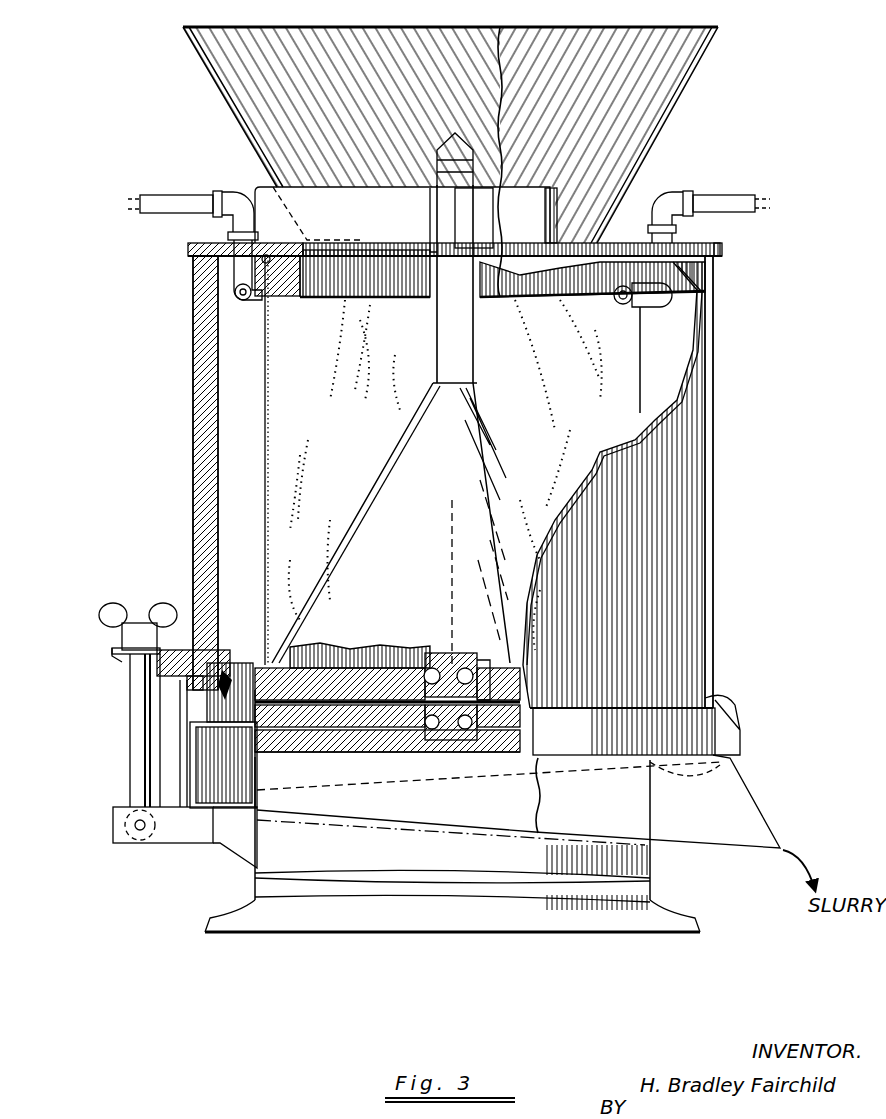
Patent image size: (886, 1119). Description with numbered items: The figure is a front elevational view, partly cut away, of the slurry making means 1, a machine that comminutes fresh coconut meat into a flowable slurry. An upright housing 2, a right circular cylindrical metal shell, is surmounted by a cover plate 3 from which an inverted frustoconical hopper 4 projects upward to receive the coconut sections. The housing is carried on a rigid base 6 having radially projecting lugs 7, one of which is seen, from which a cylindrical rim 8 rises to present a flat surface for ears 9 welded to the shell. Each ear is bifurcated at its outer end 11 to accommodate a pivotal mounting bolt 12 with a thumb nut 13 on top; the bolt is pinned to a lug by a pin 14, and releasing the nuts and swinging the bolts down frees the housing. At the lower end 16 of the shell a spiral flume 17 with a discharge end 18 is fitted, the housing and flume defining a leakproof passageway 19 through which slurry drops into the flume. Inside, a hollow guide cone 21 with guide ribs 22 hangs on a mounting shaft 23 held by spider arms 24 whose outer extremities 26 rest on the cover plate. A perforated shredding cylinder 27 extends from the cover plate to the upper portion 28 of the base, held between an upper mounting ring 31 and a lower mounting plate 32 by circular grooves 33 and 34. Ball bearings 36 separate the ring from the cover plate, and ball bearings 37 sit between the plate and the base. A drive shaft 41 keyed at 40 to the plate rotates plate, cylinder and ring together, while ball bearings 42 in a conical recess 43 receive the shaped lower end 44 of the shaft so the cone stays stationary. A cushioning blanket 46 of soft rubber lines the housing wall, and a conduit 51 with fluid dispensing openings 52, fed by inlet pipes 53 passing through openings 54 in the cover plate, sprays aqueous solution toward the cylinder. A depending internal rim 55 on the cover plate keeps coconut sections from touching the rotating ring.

The means for producing slurry 1 is at (758, 124).
The upright housing 2 is at (703, 418).
The cover plate 3 is at (722, 250).
The hopper 4 is at (695, 63).
The base 6 is at (670, 917).
The lugs 7 is at (187, 840).
The cylindrical rim 8 is at (170, 750).
The ears 9 is at (152, 672).
The bifurcated outer end 11 is at (118, 655).
The pivotal mounting bolt 12 is at (133, 735).
The thumb nut 13 is at (138, 625).
The pin 14 is at (130, 832).
The lower end of housing shell 16 is at (712, 700).
The spiral flume 17 is at (198, 775).
The discharge end 18 is at (755, 800).
The circumferential leakproof passageway 19 is at (224, 690).
The hollow guide cone 21 is at (430, 494).
The guide ribs 22 is at (333, 537).
The mounting shaft 23 is at (436, 342).
The spider arms 24 is at (480, 188).
The outer extremities of spider arms 26 is at (255, 200).
The perforated shredding cylinder 27 is at (268, 410).
The upper portion of base 28 is at (267, 720).
The upper mounting ring 31 is at (280, 300).
The lower mounting plate 32 is at (258, 660).
The circular groove 33 is at (260, 285).
The circular groove 34 is at (288, 672).
The ball bearings 36 is at (268, 255).
The ball bearings 37 is at (300, 730).
The key 40 is at (425, 728).
The drive shaft 41 is at (475, 745).
The ball bearings 42 is at (448, 670).
The recess 43 is at (405, 678).
The lower end of shaft 44 is at (482, 662).
The cushioning blanket 46 is at (212, 416).
The conduit 51 is at (642, 328).
The fluid dispensing openings 52 is at (262, 306).
The inlet pipes 53 is at (183, 200).
The openings 54 is at (226, 245).
The depending internal rim 55 is at (293, 297).